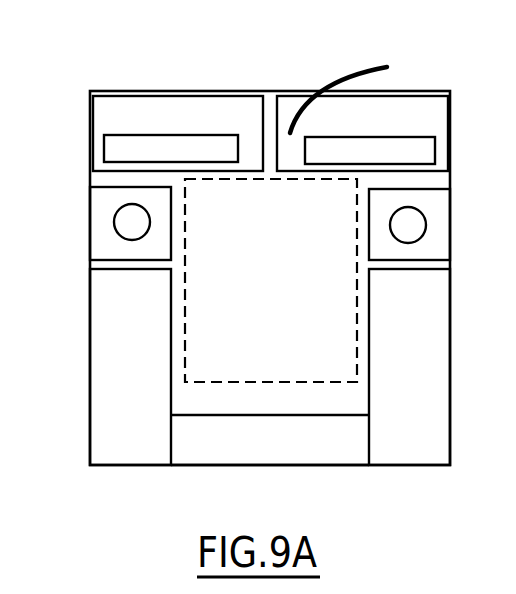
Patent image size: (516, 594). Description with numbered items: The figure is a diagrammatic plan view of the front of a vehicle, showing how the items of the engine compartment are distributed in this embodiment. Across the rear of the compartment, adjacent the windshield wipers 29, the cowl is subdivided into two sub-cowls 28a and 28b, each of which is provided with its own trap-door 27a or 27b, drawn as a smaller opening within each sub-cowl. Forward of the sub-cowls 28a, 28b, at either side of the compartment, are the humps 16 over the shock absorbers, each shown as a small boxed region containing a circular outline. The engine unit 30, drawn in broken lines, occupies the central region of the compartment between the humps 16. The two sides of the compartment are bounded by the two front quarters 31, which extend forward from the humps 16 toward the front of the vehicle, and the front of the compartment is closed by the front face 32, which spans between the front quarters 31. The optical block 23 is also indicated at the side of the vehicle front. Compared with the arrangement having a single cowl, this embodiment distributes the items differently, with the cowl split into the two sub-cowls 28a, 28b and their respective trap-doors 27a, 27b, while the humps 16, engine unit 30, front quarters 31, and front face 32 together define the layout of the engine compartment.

The humps over the shock absorbers 16 is at (105, 237).
The optical block 23 is at (303, 278).
The trap-door 27a is at (117, 140).
The trap-door 27b is at (420, 153).
The sub-cowl 28a is at (198, 113).
The sub-cowl 28b is at (425, 113).
The windshield wipers 29 is at (340, 77).
The engine unit 30 is at (288, 336).
The front quarters 31 is at (108, 418).
The front face 32 is at (258, 445).